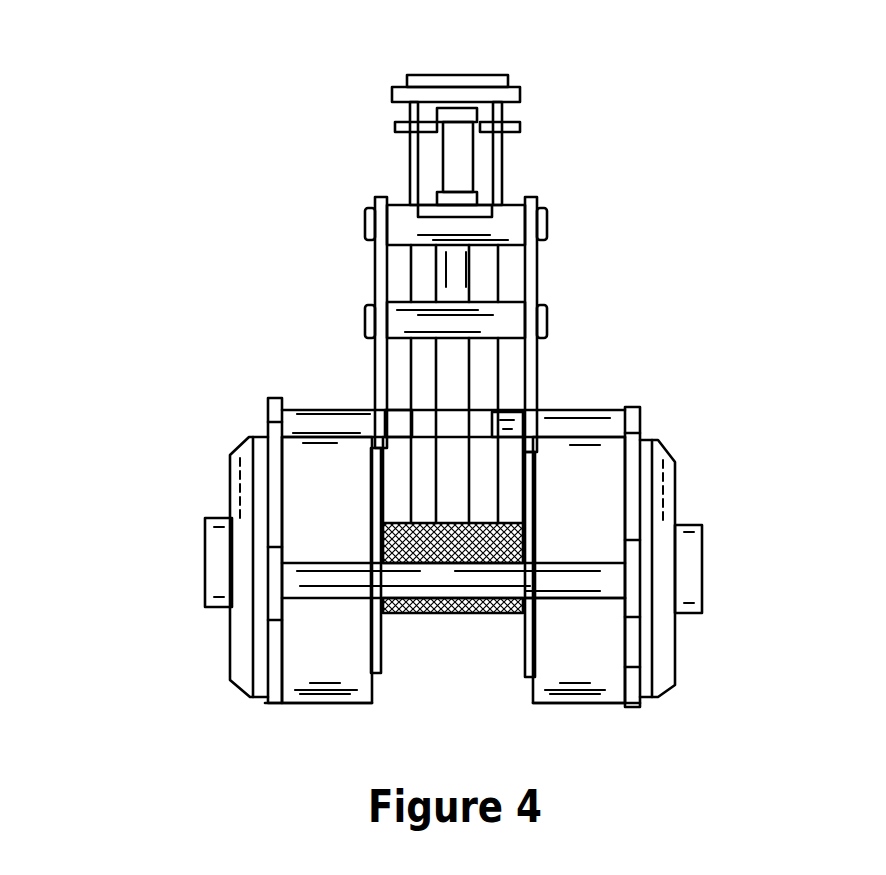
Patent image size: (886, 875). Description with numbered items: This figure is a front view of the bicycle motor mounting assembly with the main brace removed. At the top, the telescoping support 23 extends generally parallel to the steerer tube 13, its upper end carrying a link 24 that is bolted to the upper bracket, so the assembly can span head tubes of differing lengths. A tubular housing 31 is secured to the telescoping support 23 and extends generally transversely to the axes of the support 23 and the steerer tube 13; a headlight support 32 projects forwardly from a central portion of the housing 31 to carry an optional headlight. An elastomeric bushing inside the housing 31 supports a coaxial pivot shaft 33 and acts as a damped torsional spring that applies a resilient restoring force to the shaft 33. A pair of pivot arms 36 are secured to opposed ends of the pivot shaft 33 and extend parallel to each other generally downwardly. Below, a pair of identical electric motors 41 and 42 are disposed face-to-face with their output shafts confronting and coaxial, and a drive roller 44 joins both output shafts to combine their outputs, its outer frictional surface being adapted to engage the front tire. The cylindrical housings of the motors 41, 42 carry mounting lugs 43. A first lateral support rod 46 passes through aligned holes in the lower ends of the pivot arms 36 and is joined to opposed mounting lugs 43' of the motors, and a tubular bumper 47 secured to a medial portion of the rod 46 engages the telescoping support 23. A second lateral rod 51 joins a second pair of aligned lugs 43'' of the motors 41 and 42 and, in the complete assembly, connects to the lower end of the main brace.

The steerer tube 13 is at (407, 147).
The telescoping support 23 is at (438, 278).
The link 24 is at (458, 103).
The tubular housing 31 is at (510, 195).
The headlight support 32 is at (410, 197).
The pivot shaft 33 is at (550, 217).
The pivot arms 36 is at (380, 283).
The electric motor 41 is at (307, 498).
The electric motor 42 is at (597, 495).
The mounting lugs 43 is at (703, 530).
The opposed mounting lugs 43' is at (150, 531).
The second pair of aligned lugs 43'' is at (437, 565).
The drive roller 44 is at (470, 613).
The first lateral support rod 46 is at (500, 412).
The tubular bumper 47 is at (417, 405).
The second lateral rod 51 is at (572, 600).